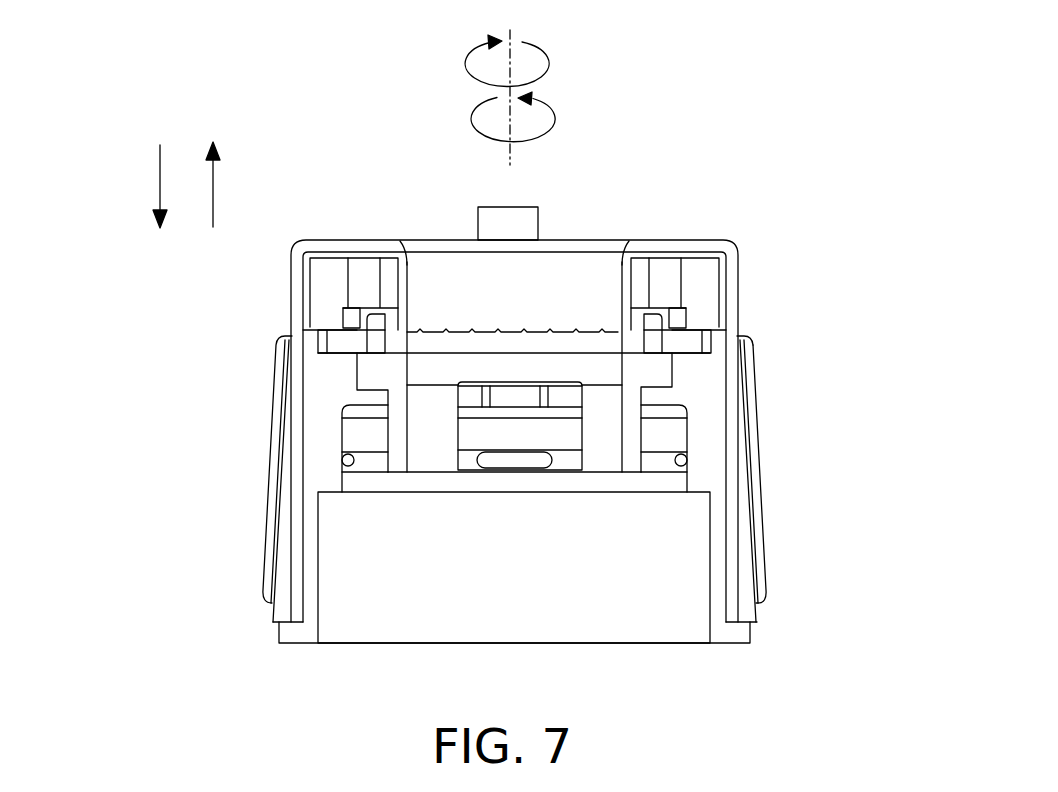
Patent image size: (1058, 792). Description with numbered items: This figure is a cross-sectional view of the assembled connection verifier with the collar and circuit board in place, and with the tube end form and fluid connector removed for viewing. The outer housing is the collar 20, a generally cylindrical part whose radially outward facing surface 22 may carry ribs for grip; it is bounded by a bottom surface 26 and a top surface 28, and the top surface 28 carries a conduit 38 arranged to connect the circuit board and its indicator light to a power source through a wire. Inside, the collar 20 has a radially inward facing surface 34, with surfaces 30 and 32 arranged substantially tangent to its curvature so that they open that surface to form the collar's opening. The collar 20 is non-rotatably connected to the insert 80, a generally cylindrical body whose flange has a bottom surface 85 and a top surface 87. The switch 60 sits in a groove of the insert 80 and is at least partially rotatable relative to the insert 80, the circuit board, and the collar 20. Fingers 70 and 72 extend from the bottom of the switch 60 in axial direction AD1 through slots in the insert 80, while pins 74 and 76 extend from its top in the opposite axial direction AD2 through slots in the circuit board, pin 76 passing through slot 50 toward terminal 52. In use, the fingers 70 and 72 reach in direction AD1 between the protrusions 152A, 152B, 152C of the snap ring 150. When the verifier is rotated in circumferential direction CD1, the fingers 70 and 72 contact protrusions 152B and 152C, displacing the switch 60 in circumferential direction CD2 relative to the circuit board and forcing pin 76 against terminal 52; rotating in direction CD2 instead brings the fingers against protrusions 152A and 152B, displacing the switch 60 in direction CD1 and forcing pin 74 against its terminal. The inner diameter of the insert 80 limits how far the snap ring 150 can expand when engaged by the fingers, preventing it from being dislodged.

The collar 20 is at (779, 507).
The radially outward facing surface 22 is at (740, 273).
The bottom surface 26 is at (756, 624).
The top surface 28 is at (684, 240).
The surface 30 is at (422, 238).
The surface 32 is at (606, 238).
The radially inward facing surface 34 is at (448, 263).
The conduit 38 is at (523, 215).
The slot 50 is at (472, 328).
The terminal 52 is at (673, 318).
The switch 60 is at (374, 367).
The finger 70 is at (398, 434).
The finger 72 is at (632, 413).
The pin 74 is at (387, 337).
The pin 76 is at (645, 338).
The insert 80 is at (645, 629).
The bottom surface 85 is at (730, 643).
The top surface 87 is at (750, 623).
The snap ring 150 is at (493, 462).
The protrusion 152A is at (348, 458).
The protrusion 152B is at (530, 462).
The protrusion 152C is at (683, 458).
The axial direction AD1 is at (157, 180).
The axial direction AD2 is at (213, 192).
The circumferential direction CD1 is at (551, 63).
The circumferential direction CD2 is at (551, 120).